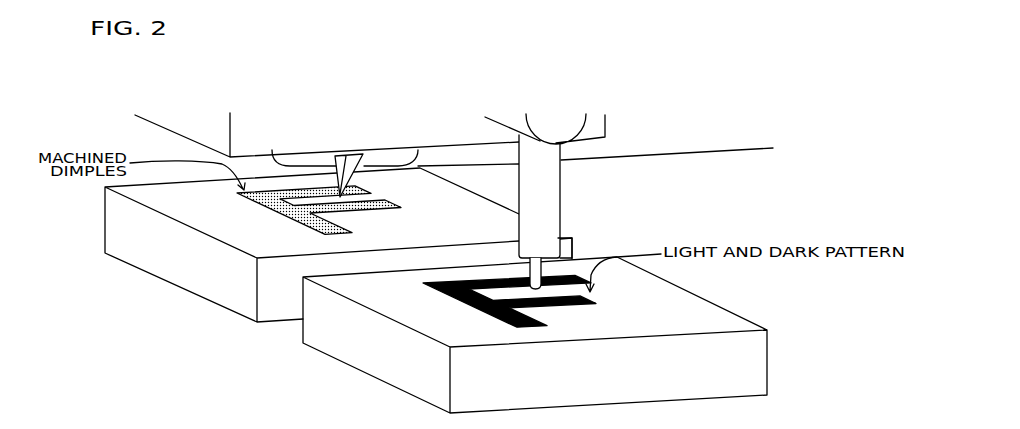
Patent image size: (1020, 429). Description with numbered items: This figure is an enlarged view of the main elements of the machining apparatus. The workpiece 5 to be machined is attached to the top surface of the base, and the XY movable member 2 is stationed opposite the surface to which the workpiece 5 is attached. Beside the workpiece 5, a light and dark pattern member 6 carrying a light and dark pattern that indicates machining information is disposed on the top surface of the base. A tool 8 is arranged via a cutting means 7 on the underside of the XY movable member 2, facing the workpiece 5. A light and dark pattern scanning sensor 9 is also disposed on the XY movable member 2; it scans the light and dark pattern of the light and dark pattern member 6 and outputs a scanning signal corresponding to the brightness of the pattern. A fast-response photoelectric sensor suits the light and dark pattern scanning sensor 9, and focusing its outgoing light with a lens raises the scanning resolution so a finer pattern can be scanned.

The XY movable member 2 is at (592, 125).
The workpiece 5 is at (177, 249).
The light and dark pattern member 6 is at (383, 340).
The cutting means 7 is at (418, 150).
The tool 8 is at (272, 150).
The light and dark pattern scanning sensor 9 is at (584, 259).